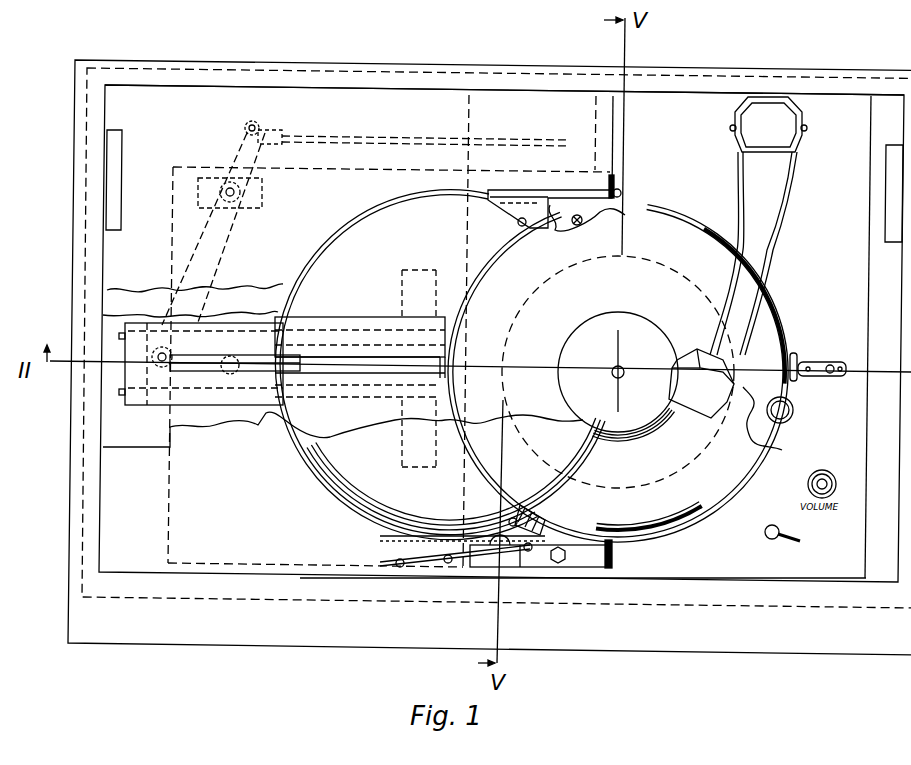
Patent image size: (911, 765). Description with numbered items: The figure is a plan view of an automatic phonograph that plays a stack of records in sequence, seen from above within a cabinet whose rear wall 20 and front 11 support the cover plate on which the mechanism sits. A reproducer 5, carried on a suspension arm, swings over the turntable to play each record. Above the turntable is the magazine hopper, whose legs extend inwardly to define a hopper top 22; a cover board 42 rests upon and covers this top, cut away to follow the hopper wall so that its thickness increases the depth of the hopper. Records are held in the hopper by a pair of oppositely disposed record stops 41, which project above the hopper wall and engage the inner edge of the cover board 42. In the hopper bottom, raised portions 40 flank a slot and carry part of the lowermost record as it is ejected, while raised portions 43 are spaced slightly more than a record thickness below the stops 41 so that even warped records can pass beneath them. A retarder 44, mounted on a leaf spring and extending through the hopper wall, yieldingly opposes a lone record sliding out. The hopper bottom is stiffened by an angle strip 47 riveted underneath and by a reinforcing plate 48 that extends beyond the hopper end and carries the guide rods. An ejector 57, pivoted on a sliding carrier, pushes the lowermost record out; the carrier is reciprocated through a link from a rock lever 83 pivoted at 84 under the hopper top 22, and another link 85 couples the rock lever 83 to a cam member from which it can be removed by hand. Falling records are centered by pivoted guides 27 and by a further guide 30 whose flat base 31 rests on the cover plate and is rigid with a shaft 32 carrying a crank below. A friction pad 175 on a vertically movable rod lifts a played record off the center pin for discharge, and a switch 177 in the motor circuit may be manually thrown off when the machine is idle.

The front of the cabinet 11 is at (283, 592).
The rear wall 20 is at (577, 84).
The cover board 42 is at (173, 108).
The link 85 is at (388, 135).
The pivot 84 is at (225, 180).
The rock lever 83 is at (103, 315).
The hopper top 22 is at (442, 418).
The reinforcing plate 48 is at (172, 403).
The raised portions 40 is at (310, 400).
The ejector 57 is at (205, 358).
The angle strip 47 is at (412, 466).
The record stops 41 is at (505, 201).
The raised portions 43 is at (519, 224).
The retarder 44 is at (492, 540).
The friction pad 175 is at (580, 217).
The guides 27 is at (615, 183).
The reproducer 5 is at (752, 425).
The guide 30 is at (795, 362).
The flat base 31 is at (815, 362).
The shaft 32 is at (829, 374).
The switch 177 is at (768, 537).